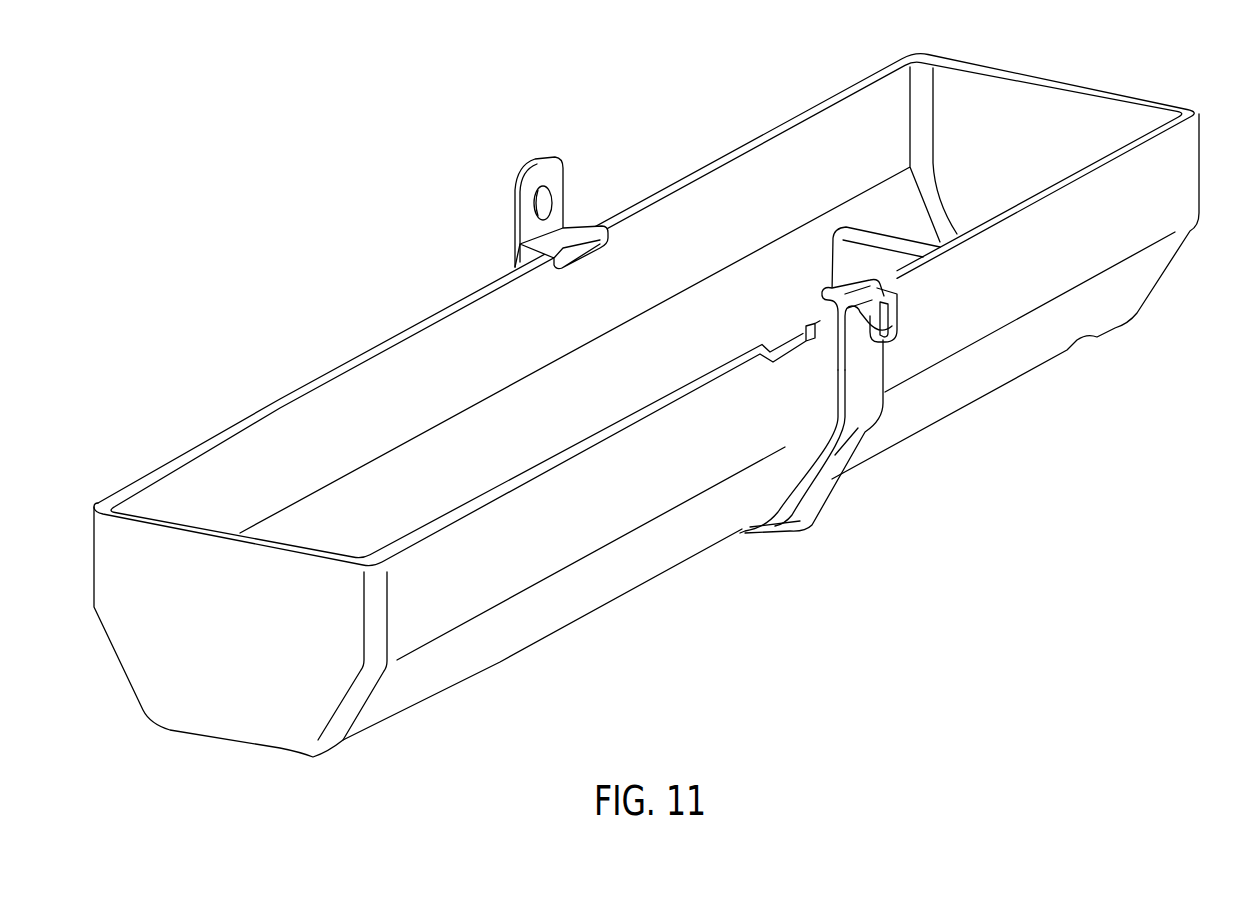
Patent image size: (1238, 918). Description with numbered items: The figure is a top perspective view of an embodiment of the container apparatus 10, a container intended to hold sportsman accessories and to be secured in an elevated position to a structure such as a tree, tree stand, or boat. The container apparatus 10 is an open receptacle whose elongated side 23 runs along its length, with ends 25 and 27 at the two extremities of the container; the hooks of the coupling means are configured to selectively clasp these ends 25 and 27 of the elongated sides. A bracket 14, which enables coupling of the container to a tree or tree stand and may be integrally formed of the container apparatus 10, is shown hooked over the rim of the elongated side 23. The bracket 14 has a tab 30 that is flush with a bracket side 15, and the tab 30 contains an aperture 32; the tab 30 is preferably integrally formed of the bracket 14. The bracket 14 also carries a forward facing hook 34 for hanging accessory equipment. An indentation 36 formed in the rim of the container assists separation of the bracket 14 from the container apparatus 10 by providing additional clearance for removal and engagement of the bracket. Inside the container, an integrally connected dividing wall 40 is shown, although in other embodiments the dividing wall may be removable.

The container apparatus 10 is at (136, 114).
The bracket 14 is at (845, 409).
The bracket side 15 is at (515, 257).
The elongated side 23 is at (550, 552).
The end 25 is at (107, 497).
The end 27 is at (1153, 137).
The tab 30 is at (561, 186).
The aperture 32 is at (553, 197).
The forward facing hook 34 is at (900, 311).
The indentation 36 is at (805, 355).
The dividing wall 40 is at (880, 240).